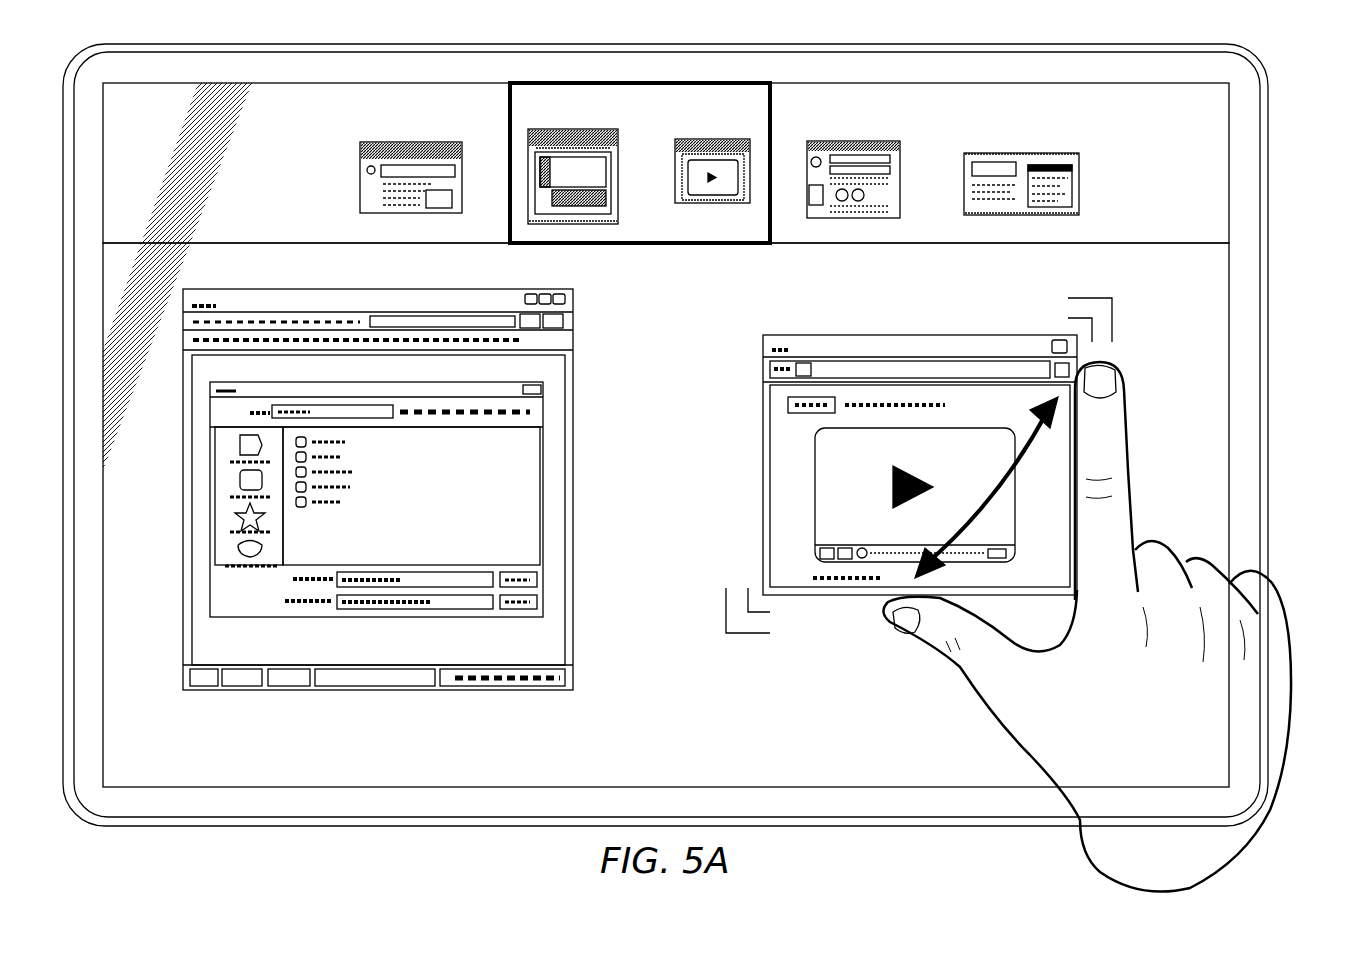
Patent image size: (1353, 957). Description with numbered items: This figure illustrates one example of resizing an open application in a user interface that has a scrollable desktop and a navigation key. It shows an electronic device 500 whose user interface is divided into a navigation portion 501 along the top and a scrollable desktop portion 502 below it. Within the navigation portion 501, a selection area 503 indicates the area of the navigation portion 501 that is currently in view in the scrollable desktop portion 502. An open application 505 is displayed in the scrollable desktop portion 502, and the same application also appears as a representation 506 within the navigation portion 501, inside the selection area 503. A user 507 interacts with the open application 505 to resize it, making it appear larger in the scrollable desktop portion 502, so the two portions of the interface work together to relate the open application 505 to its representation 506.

The electronic device 500 is at (1270, 274).
The navigation portion 501 is at (1215, 147).
The scrollable desktop portion 502 is at (1215, 362).
The selection area 503 is at (508, 124).
The open application 505 is at (763, 451).
The representation 506 is at (713, 140).
The user 507 is at (980, 703).